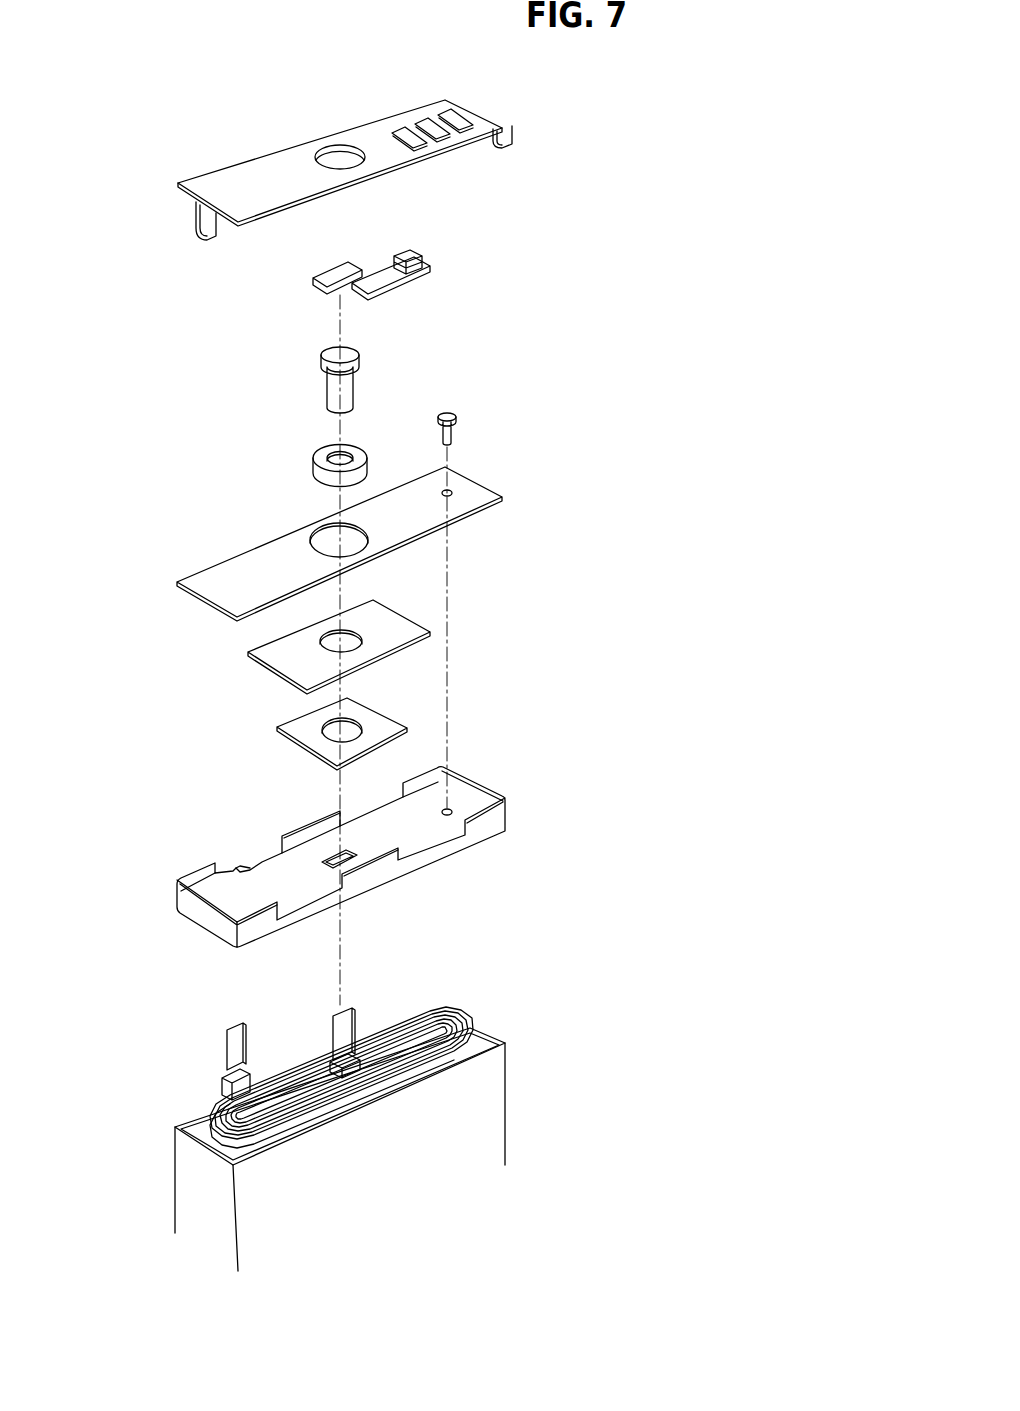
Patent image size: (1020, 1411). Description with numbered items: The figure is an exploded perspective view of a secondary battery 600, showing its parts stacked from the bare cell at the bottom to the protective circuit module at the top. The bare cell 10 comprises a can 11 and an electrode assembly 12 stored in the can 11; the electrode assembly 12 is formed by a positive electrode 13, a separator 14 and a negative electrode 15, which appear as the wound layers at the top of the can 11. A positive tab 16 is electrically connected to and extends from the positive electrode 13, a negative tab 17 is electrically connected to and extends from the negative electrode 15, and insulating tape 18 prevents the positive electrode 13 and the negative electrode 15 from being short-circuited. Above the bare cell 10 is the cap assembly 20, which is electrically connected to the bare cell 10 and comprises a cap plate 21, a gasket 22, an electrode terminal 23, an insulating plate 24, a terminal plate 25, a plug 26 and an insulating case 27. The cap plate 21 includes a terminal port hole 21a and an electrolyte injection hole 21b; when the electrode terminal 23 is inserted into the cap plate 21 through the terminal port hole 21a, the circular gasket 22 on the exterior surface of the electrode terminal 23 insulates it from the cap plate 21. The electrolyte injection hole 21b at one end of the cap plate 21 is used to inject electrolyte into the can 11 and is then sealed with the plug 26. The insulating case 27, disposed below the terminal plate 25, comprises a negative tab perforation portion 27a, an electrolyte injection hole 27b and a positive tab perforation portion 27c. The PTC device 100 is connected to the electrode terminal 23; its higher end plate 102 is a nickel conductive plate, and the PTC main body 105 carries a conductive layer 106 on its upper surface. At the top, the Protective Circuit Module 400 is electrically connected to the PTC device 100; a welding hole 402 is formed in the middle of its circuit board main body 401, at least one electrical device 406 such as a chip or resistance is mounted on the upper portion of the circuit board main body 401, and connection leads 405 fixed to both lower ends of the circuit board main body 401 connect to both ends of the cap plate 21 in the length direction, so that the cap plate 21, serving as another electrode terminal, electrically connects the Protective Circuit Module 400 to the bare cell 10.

The secondary battery 600 is at (85, 85).
The Protective Circuit Module (PCM) 400 is at (101, 136).
The circuit board main body 401 is at (248, 167).
The welding hole 402 is at (335, 150).
The connection leads 405 is at (197, 212).
The electrical device 406 is at (462, 118).
The PTC device 100 is at (296, 289).
The higher end plate 102 is at (325, 276).
The PTC main body 105 is at (430, 270).
The conductive layer 106 is at (413, 249).
The cap assembly 20 is at (108, 345).
The cap plate 21 is at (222, 570).
The terminal port hole 21a is at (357, 533).
The electrolyte injection hole 21b is at (452, 490).
The gasket 22 is at (322, 458).
The electrode terminal 23 is at (330, 355).
The insulating plate 24 is at (255, 660).
The terminal plate 25 is at (290, 738).
The plug 26 is at (450, 414).
The insulating case 27 is at (180, 850).
The negative tab perforation portion 27a is at (333, 855).
The electrolyte injection hole 27b is at (450, 810).
The positive tab perforation portion 27c is at (250, 870).
The bare cell 10 is at (113, 985).
The can 11 is at (485, 1107).
The electrode assembly 12 is at (533, 970).
The positive electrode 13 is at (470, 1023).
The separator 14 is at (460, 1015).
The negative electrode 15 is at (443, 1015).
The positive tab 16 is at (230, 1058).
The negative tab 17 is at (337, 1033).
The insulating tape 18 is at (367, 1062).